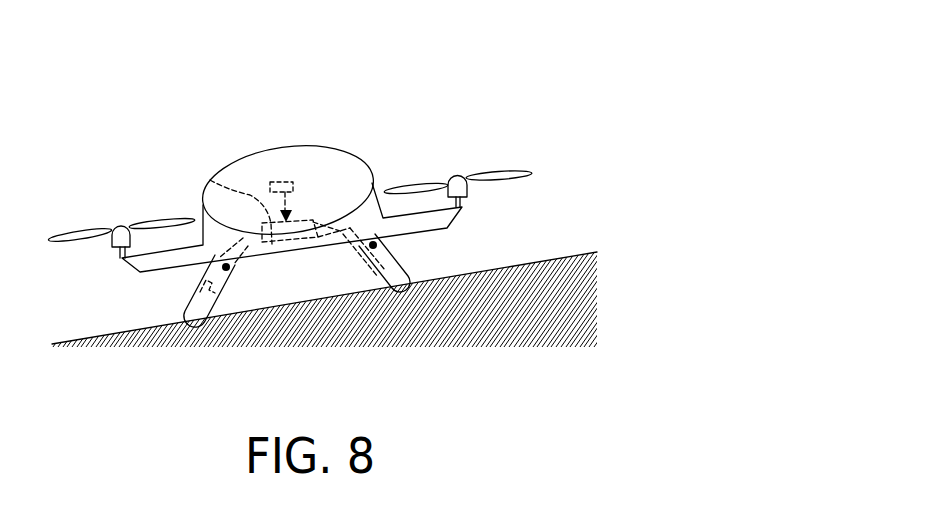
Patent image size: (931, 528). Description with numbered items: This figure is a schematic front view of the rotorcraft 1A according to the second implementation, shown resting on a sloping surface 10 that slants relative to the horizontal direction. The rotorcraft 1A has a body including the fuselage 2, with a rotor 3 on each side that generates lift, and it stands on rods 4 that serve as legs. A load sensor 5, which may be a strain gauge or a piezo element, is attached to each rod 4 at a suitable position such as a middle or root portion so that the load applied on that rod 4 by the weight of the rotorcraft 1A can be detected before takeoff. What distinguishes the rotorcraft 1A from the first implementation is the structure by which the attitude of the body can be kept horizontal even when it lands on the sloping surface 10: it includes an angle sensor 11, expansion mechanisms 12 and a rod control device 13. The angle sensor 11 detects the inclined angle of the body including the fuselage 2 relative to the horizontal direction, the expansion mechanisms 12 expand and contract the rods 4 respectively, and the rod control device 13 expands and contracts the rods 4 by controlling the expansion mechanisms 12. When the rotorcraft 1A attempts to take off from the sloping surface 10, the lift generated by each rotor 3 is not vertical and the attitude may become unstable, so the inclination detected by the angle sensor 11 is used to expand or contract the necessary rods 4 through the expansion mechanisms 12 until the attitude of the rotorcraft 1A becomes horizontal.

The rotorcraft 1A is at (353, 119).
The fuselage 2 is at (278, 150).
The rotor 3 is at (498, 171).
The rod 4 is at (408, 278).
The load sensor 5 is at (357, 248).
The sloping surface 10 is at (525, 262).
The angle sensor 11 is at (280, 182).
The expansion mechanism 12 is at (198, 287).
The rod control device 13 is at (210, 180).